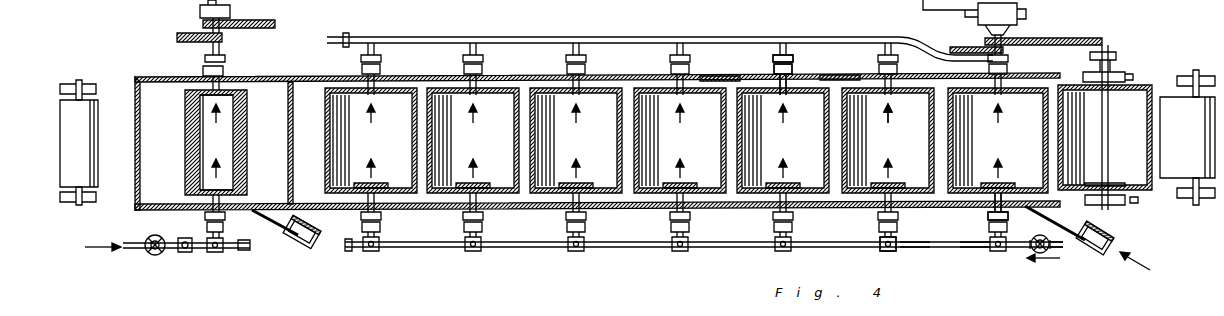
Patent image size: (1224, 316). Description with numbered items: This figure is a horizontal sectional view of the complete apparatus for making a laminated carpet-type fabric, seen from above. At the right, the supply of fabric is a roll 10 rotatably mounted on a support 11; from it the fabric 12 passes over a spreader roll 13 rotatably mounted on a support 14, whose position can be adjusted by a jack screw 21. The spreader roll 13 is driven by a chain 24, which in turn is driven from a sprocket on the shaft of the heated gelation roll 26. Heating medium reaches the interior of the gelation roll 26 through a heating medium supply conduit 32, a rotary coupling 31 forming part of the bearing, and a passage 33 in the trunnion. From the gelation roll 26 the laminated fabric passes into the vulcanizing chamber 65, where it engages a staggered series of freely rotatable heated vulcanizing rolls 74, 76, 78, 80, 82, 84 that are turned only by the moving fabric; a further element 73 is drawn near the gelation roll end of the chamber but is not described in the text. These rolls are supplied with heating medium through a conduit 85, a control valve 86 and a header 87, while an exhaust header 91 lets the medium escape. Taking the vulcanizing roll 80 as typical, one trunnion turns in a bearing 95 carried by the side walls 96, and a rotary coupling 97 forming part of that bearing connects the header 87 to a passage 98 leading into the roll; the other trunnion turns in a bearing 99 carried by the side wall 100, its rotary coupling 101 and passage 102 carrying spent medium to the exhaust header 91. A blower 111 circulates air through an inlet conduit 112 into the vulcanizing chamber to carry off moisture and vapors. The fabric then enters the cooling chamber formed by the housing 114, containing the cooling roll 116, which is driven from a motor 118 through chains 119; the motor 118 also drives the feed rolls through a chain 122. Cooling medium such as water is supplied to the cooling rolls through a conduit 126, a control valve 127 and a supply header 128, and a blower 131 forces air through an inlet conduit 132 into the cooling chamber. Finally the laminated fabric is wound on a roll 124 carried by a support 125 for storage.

The roll 10 is at (1196, 156).
The support 11 is at (1209, 76).
The fabric 12 is at (1170, 96).
The spreader roll 13 is at (1134, 86).
The support 14 is at (1113, 50).
The jack screw 21 is at (1108, 72).
The chain 24 is at (1066, 38).
The gelation roll 26 is at (1042, 118).
The rotary coupling 31 is at (986, 222).
The heating medium supply conduit 32 is at (986, 248).
The passage 33 is at (1000, 186).
The vulcanizing chamber 65 is at (845, 75).
The connecting bar 73 is at (962, 44).
The heated vulcanizing roll 74 is at (930, 198).
The heated vulcanizing roll 76 is at (814, 198).
The heated vulcanizing roll 78 is at (714, 198).
The heated vulcanizing roll 80 is at (610, 198).
The heated vulcanizing roll 82 is at (511, 198).
The heated vulcanizing roll 84 is at (404, 200).
The conduit 85 is at (1074, 248).
The control valve 86 is at (1036, 252).
The header 87 is at (608, 251).
The exhaust header 91 is at (644, 36).
The bearing 95 is at (880, 238).
The side walls 96 is at (748, 212).
The rotary coupling 97 is at (896, 246).
The passage 98 is at (895, 166).
The bearing 99 is at (767, 68).
The side wall 100 is at (706, 76).
The rotary coupling 101 is at (792, 56).
The passage 102 is at (782, 100).
The blower 111 is at (1122, 249).
The inlet conduit 112 is at (1110, 227).
The housing 114 is at (268, 76).
The cooling roll 116 is at (244, 185).
The motor 118 is at (231, 10).
The chains 119 is at (276, 25).
The chain 122 is at (188, 34).
The roll 124 is at (96, 122).
The support 125 is at (88, 82).
The conduit 126 is at (134, 251).
The control valve 127 is at (152, 236).
The supply header 128 is at (214, 253).
The blower 131 is at (320, 250).
The inlet conduit 132 is at (294, 244).